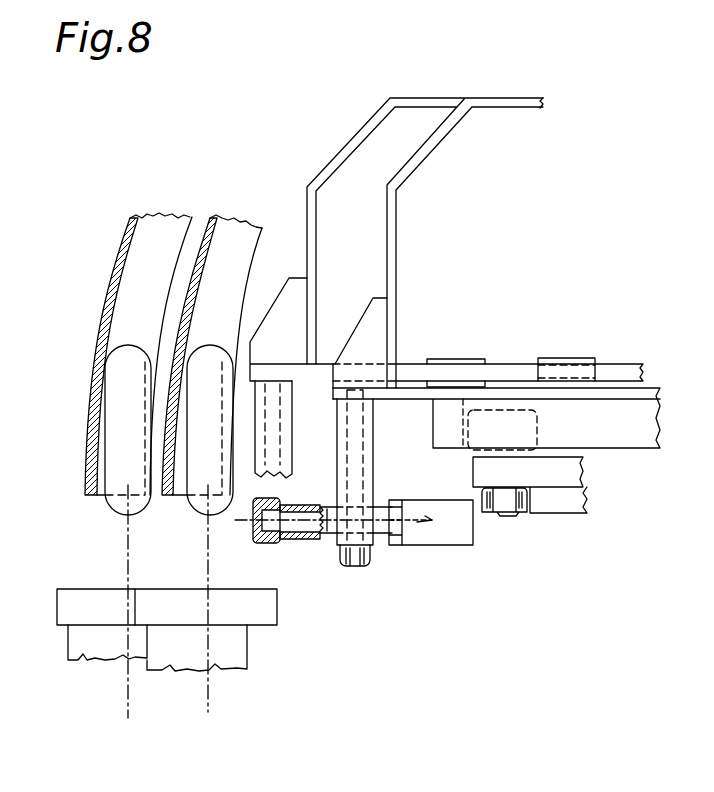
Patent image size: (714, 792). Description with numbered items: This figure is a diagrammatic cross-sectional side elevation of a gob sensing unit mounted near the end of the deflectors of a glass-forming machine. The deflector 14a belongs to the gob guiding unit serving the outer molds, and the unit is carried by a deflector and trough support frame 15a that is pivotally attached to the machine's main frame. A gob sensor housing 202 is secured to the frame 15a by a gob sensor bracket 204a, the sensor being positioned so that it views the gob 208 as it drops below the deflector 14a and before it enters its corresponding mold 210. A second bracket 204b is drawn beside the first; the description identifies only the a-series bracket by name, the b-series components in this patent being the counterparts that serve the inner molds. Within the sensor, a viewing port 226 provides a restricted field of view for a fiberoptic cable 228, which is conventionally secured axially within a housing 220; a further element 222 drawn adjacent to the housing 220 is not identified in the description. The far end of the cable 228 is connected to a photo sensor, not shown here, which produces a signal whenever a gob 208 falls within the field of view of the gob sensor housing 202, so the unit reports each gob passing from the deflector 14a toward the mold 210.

The deflector 14a is at (163, 497).
The deflector and trough support frame 15a is at (407, 391).
The gob sensor housing 202 is at (316, 527).
The gob sensor bracket 204a is at (370, 457).
The mounting leg 204b is at (287, 423).
The gob 208 is at (198, 483).
The mold 210 is at (253, 653).
The housing 220 is at (318, 539).
The sleeve 222 is at (275, 542).
The viewing port 226 is at (257, 516).
The fiberoptic cable 228 is at (417, 527).